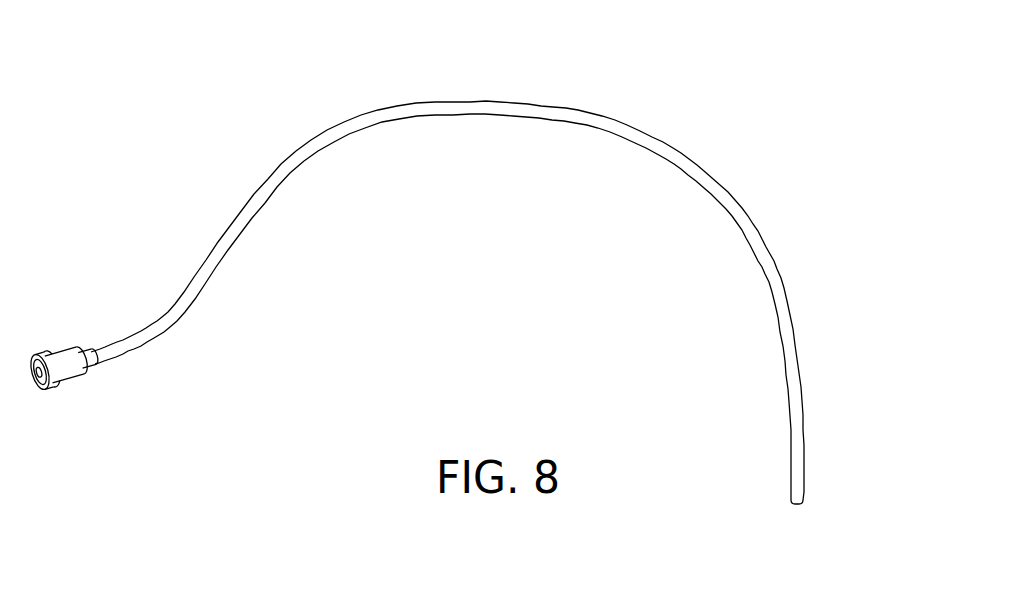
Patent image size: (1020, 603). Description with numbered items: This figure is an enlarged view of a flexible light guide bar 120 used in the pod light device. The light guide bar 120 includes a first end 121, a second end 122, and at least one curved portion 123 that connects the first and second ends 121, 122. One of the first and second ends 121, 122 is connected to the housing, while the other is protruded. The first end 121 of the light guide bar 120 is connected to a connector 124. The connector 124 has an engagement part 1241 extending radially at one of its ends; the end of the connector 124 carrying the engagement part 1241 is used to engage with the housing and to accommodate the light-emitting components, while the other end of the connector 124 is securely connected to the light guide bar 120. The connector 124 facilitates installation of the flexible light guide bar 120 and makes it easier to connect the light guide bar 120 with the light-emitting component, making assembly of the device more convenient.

The light guide bar 120 is at (88, 56).
The first end 121 is at (113, 349).
The second end 122 is at (793, 358).
The curved portion 123 is at (537, 108).
The connector 124 is at (65, 373).
The engagement part 1241 is at (53, 386).